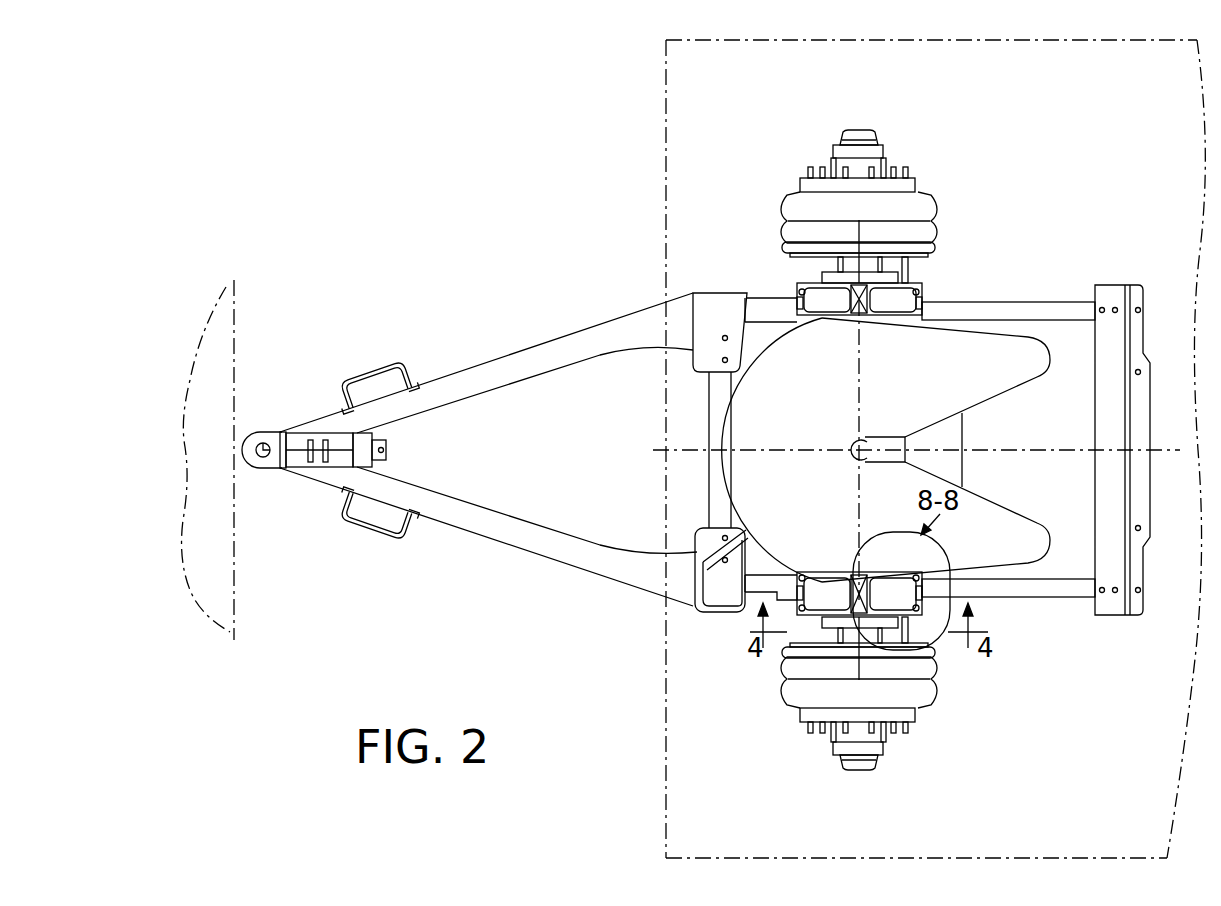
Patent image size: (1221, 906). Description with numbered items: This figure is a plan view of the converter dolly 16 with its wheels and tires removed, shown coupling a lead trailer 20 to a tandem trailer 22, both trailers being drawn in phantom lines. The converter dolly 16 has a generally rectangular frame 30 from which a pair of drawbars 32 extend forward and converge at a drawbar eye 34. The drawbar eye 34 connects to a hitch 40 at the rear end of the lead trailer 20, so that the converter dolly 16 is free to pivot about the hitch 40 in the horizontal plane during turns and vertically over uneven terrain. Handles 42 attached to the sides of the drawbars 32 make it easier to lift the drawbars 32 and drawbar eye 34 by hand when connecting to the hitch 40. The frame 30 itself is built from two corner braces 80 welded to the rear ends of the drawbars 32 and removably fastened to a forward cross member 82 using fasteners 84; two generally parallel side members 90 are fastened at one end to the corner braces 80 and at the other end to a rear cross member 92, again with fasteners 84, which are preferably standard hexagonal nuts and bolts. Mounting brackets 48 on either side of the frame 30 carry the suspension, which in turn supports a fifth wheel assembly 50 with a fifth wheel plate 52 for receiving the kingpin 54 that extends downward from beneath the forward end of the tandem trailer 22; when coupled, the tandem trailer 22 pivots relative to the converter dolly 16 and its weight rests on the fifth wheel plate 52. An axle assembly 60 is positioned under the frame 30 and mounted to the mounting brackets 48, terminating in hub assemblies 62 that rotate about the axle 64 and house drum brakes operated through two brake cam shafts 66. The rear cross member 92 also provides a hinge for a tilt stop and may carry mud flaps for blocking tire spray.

The converter dolly 16 is at (557, 173).
The lead trailer 20 is at (236, 352).
The tandem trailer 22 is at (664, 805).
The frame 30 is at (1021, 274).
The drawbars 32 is at (503, 387).
The drawbar eye 34 is at (245, 445).
The hitch 40 is at (238, 457).
The handles 42 is at (398, 358).
The mounting brackets 48 is at (905, 303).
The fifth wheel assembly 50 is at (988, 393).
The fifth wheel plate 52 is at (812, 401).
The kingpin 54 is at (870, 440).
The axle assembly 60 is at (893, 138).
The hub assemblies 62 is at (920, 208).
The axle 64 is at (840, 268).
The brake cam shafts 66 is at (906, 272).
The corner braces 80 is at (710, 313).
The forward cross member 82 is at (714, 408).
The fasteners 84 is at (722, 360).
The side members 90 is at (1057, 311).
The rear cross member 92 is at (1112, 614).